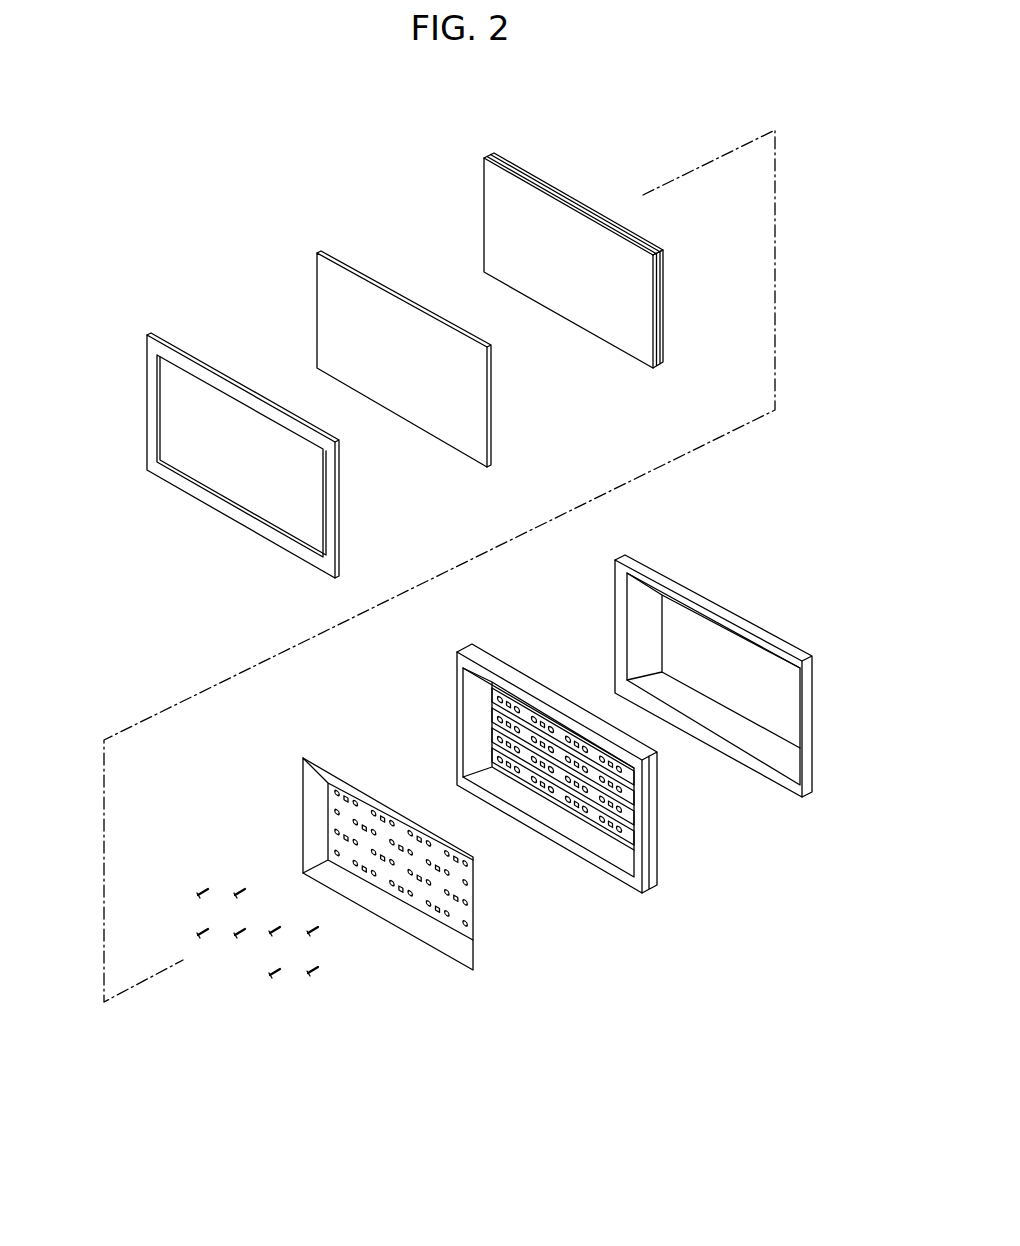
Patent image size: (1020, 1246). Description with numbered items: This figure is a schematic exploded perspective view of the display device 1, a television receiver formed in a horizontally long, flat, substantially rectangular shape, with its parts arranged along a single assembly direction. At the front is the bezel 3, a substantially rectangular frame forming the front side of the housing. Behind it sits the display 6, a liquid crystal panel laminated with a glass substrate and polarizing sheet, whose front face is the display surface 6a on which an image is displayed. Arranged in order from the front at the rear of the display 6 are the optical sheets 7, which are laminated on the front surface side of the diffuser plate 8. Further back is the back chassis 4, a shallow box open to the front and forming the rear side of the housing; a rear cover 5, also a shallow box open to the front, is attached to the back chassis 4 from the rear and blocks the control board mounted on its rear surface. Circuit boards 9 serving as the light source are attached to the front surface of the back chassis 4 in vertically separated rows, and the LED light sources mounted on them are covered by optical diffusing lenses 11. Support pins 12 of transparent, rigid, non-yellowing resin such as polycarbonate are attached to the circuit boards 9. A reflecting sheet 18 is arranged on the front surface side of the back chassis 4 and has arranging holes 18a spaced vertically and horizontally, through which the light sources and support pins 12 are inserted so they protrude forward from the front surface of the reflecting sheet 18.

The display device 1 is at (183, 222).
The bezel 3 is at (151, 350).
The back chassis 4 is at (559, 751).
The rear cover 5 is at (690, 579).
The display 6 is at (370, 359).
The display surface 6a is at (336, 320).
The optical sheets 7 is at (490, 156).
The diffuser plate 8 is at (548, 228).
The circuit boards 9 is at (506, 695).
The optical diffusing lenses 11 is at (495, 722).
The support pins 12 is at (203, 892).
The reflecting sheet 18 is at (360, 849).
The arranging holes 18a is at (336, 816).